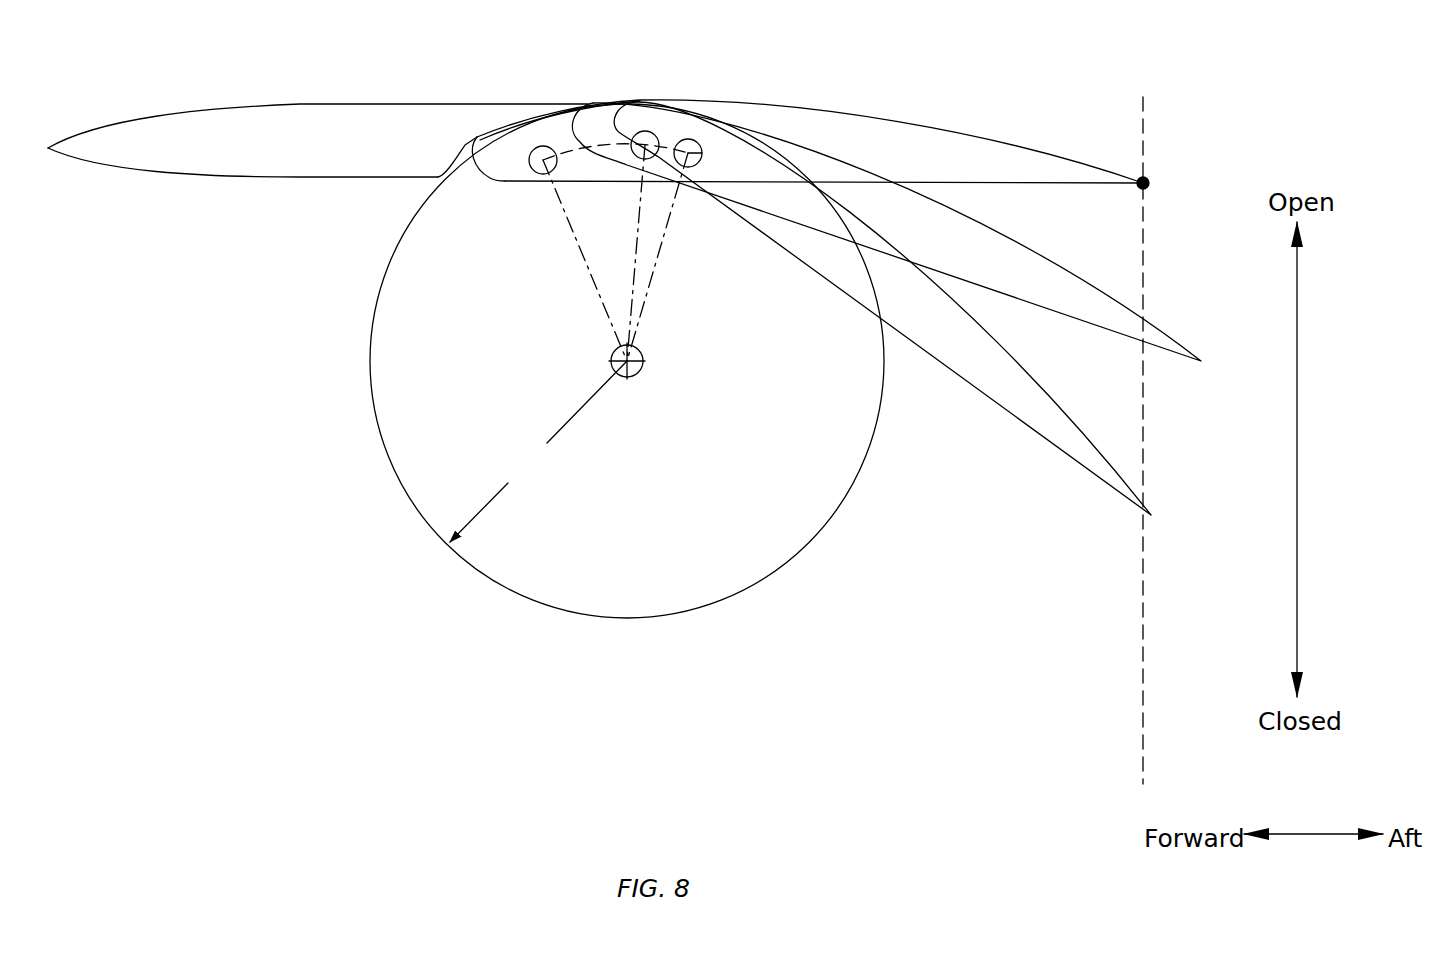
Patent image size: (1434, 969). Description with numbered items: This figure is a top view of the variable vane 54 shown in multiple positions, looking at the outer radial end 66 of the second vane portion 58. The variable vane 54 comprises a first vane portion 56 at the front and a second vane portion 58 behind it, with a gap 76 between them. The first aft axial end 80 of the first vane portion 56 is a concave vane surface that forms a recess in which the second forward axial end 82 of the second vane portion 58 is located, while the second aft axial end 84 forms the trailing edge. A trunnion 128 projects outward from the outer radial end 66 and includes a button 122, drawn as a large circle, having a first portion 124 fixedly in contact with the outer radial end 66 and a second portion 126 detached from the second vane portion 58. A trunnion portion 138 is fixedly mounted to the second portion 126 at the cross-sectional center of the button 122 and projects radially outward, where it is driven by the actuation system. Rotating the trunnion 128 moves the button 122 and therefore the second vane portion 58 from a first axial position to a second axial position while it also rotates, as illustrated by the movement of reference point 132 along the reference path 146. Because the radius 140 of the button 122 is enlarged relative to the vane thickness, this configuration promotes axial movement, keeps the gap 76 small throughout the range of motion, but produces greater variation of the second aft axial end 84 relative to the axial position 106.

The variable vane 54 is at (1067, 98).
The first vane portion 56 is at (295, 95).
The second vane portion 58 is at (973, 110).
The outer radial end 66 is at (927, 147).
The gap 76 is at (484, 140).
The first aft axial end 80 is at (487, 143).
The second forward axial end 82 is at (503, 142).
The second aft axial end 84 is at (1143, 183).
The axial position 106 is at (1143, 675).
The button 122 is at (737, 575).
The first portion 124 is at (717, 150).
The second portion 126 is at (825, 463).
The trunnion 128 is at (842, 538).
The reference point 132 is at (541, 152).
The trunnion portion 138 is at (657, 357).
The radius 140 is at (538, 451).
The reference path 146 is at (610, 142).